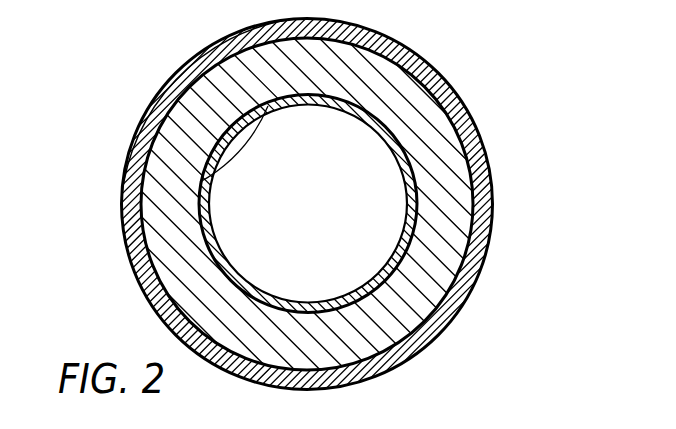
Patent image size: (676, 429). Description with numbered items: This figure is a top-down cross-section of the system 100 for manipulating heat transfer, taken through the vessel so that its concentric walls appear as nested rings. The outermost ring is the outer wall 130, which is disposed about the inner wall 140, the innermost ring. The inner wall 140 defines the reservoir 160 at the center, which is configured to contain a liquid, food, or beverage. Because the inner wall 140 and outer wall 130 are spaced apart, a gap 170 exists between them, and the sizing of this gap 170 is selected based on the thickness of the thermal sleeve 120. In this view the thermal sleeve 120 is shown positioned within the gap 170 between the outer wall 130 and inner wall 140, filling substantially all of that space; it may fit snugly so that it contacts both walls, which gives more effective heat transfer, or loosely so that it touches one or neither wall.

The system 100 is at (136, 23).
The thermal sleeve 120 is at (455, 155).
The outer wall 130 is at (458, 314).
The inner wall 140 is at (237, 135).
The reservoir 160 is at (210, 206).
The gap 170 is at (122, 206).